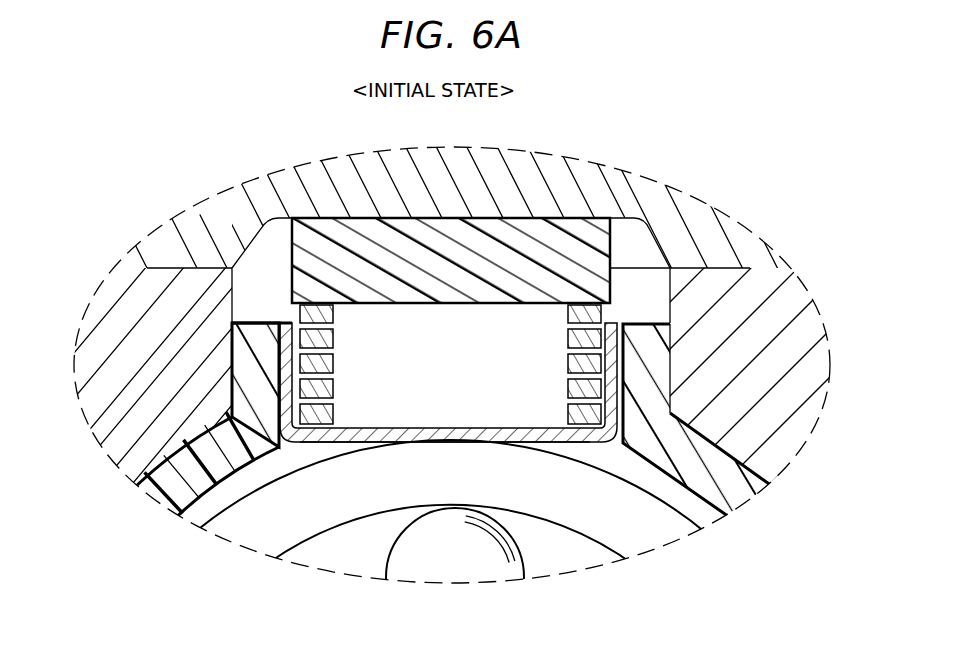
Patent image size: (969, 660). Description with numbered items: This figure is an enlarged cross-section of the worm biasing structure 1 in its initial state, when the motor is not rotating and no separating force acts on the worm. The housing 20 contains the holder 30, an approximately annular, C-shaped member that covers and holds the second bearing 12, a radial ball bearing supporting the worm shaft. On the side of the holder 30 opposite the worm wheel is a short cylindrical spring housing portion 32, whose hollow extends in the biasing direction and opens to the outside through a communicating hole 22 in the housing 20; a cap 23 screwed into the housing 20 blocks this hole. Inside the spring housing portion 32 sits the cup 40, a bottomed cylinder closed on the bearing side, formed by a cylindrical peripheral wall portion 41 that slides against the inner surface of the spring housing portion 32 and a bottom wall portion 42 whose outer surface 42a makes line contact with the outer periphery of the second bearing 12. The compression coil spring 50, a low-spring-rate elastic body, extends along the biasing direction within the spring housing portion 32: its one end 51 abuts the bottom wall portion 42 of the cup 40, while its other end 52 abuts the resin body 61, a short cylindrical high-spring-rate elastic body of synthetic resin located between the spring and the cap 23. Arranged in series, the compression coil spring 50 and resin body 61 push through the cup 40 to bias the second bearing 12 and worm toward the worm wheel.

The worm biasing structure 1 is at (689, 172).
The second bearing 12 is at (253, 484).
The housing 20 is at (791, 457).
The communicating hole 22 is at (650, 288).
The cap 23 is at (588, 197).
The holder 30 is at (173, 451).
The spring housing portion 32 is at (250, 372).
The cup 40 is at (238, 364).
The peripheral wall portion 41 is at (285, 324).
The bottom wall portion 42 is at (533, 443).
The outer surface 42a is at (337, 442).
The compression coil spring 50 is at (475, 449).
The one end 51 is at (556, 408).
The other end 52 is at (568, 309).
The resin body 61 is at (289, 253).